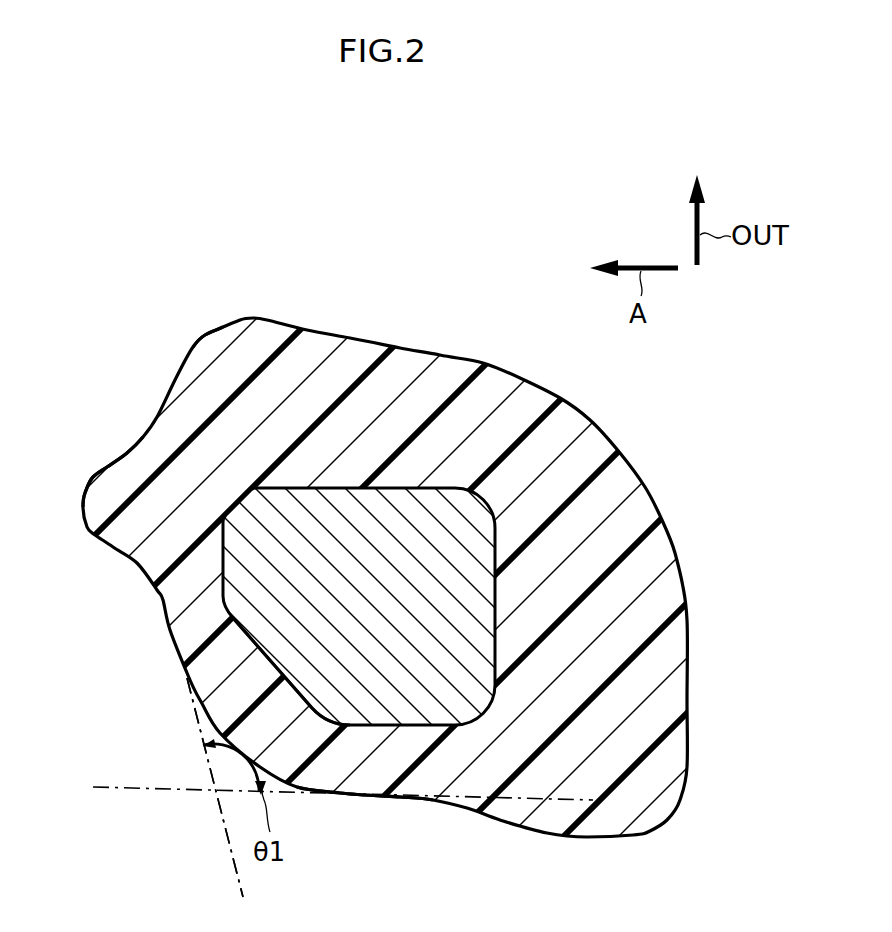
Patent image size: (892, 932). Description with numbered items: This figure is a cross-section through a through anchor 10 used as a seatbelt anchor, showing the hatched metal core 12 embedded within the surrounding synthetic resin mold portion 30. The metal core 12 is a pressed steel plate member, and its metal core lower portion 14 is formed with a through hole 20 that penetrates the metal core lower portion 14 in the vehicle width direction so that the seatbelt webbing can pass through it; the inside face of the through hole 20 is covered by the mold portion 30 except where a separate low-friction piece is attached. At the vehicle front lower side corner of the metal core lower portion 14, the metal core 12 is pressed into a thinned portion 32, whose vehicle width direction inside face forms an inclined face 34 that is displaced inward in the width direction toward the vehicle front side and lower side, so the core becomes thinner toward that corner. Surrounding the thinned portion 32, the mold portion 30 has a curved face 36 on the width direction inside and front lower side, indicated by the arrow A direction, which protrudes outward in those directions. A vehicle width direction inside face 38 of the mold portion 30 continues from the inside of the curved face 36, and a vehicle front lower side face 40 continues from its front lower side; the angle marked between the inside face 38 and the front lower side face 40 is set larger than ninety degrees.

The through anchor 10 is at (694, 511).
The metal core 12 is at (402, 528).
The metal core lower portion 14 is at (421, 497).
The through hole 20 is at (497, 606).
The mold portion 30 is at (643, 483).
The thinned portion 32 is at (298, 708).
The inclined face 34 is at (298, 702).
The curved face 36 is at (203, 745).
The vehicle width direction inside face 38 is at (400, 800).
The vehicle front lower side face 40 is at (168, 628).